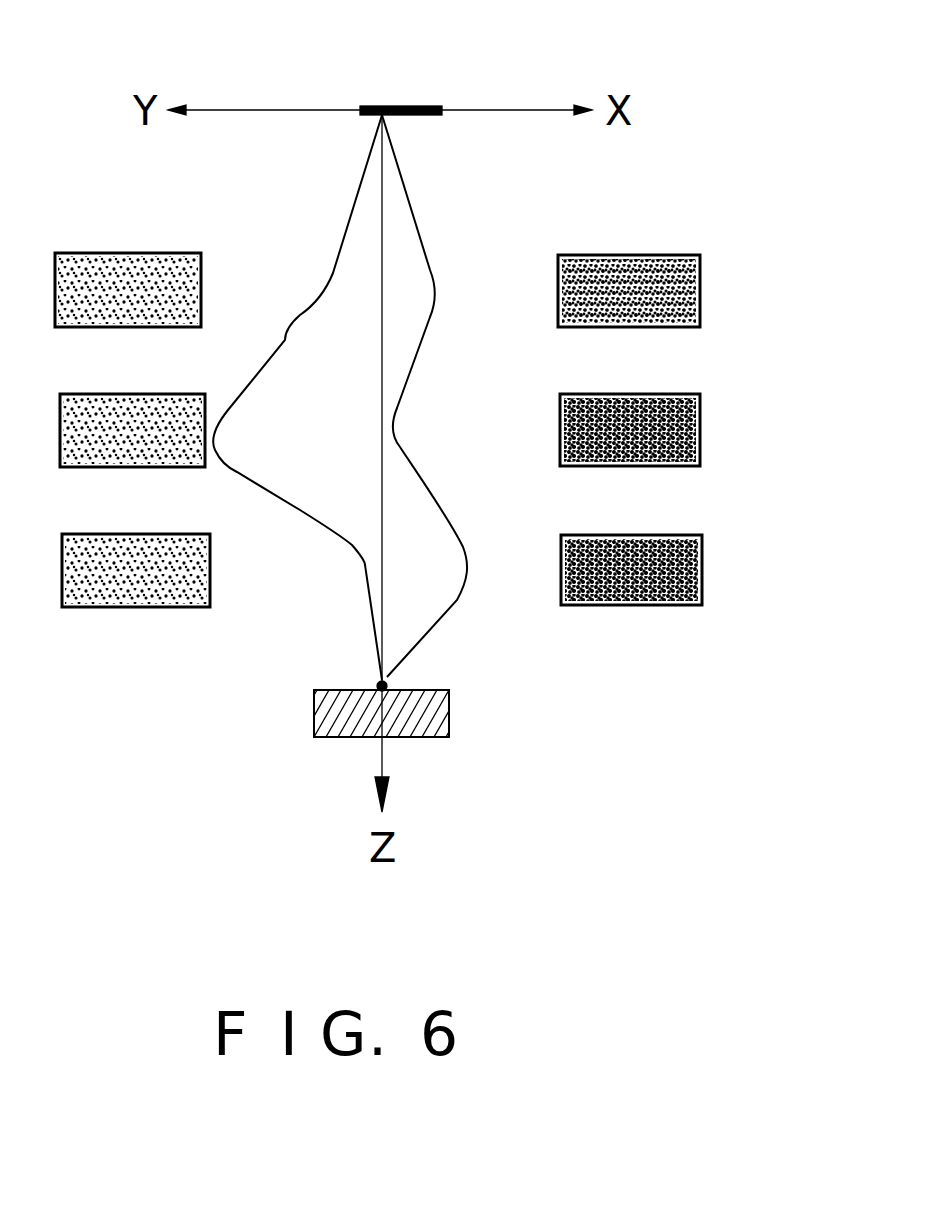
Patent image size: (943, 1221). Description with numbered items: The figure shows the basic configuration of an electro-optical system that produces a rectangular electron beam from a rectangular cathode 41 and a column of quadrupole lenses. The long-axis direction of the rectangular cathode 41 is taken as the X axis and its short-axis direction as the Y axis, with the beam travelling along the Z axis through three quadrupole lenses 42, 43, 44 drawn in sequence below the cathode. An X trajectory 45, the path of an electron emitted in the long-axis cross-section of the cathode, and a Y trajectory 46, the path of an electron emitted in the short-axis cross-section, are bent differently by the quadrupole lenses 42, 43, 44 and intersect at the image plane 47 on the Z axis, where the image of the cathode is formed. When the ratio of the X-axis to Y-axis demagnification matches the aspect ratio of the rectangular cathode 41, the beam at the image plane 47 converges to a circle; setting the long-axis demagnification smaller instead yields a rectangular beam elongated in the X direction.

The rectangular cathode 41 is at (412, 100).
The quadrupole lens Q1 42 is at (128, 265).
The quadrupole lens Q2 43 is at (132, 408).
The quadrupole lens Q3 44 is at (136, 545).
The X trajectory 45 is at (438, 396).
The Y trajectory 46 is at (297, 397).
The image plane 47 is at (386, 684).